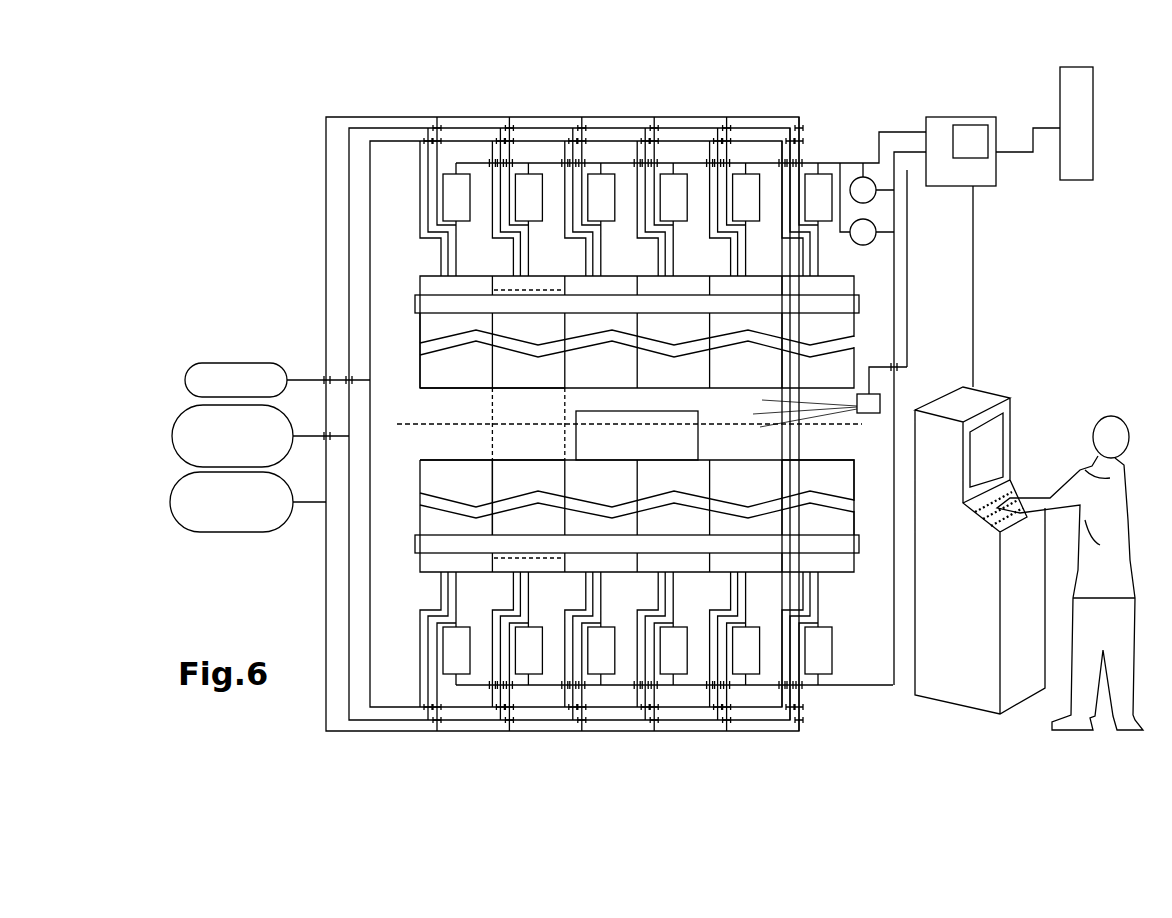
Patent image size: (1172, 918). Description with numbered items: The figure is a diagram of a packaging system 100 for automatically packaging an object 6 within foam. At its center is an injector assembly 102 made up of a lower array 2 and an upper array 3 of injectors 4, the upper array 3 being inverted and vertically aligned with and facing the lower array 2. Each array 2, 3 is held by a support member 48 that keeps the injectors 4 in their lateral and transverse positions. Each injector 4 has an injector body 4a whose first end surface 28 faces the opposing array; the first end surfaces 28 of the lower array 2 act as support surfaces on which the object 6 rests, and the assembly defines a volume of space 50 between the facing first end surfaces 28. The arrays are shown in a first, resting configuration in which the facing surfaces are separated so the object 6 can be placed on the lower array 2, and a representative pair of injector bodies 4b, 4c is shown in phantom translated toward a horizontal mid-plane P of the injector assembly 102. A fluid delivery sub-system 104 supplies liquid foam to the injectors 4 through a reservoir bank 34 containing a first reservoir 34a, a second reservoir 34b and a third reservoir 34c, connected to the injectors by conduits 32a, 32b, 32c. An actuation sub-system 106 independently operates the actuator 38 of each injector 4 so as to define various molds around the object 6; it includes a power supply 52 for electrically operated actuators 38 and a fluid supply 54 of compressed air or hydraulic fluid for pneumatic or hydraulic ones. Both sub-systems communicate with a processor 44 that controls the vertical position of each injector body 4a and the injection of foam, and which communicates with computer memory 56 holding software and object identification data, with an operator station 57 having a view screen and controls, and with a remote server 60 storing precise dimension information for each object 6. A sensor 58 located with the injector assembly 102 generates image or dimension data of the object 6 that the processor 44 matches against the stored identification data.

The packaging system 100 is at (268, 166).
The fluid delivery sub-system 104 is at (322, 238).
The injector assembly 102 is at (563, 440).
The conduit 32a is at (385, 141).
The conduit 32b is at (392, 128).
The conduit 32c is at (425, 117).
The actuator 38 is at (637, 424).
The actuation sub-system 106 is at (853, 157).
The fluid supply 54 is at (888, 418).
The power supply 52 is at (867, 204).
The processor 44 is at (993, 252).
The computer memory 56 is at (970, 141).
The server 60 is at (1076, 123).
The support member 48 is at (852, 305).
The upper array 3 is at (417, 328).
The lower array 2 is at (417, 566).
The injector 4 is at (836, 488).
The injector body 4a is at (456, 424).
The injector body 4b is at (528, 474).
The injector body 4c is at (528, 372).
The first end surface 28 is at (528, 460).
The horizontal mid-plane P is at (422, 422).
The object 6 is at (637, 435).
The volume of space 50 is at (805, 427).
The sensor 58 is at (868, 413).
The operator station 57 is at (1029, 558).
The reservoir bank 34 is at (270, 476).
The first reservoir 34a is at (248, 502).
The second reservoir 34b is at (260, 436).
The third reservoir 34c is at (277, 380).